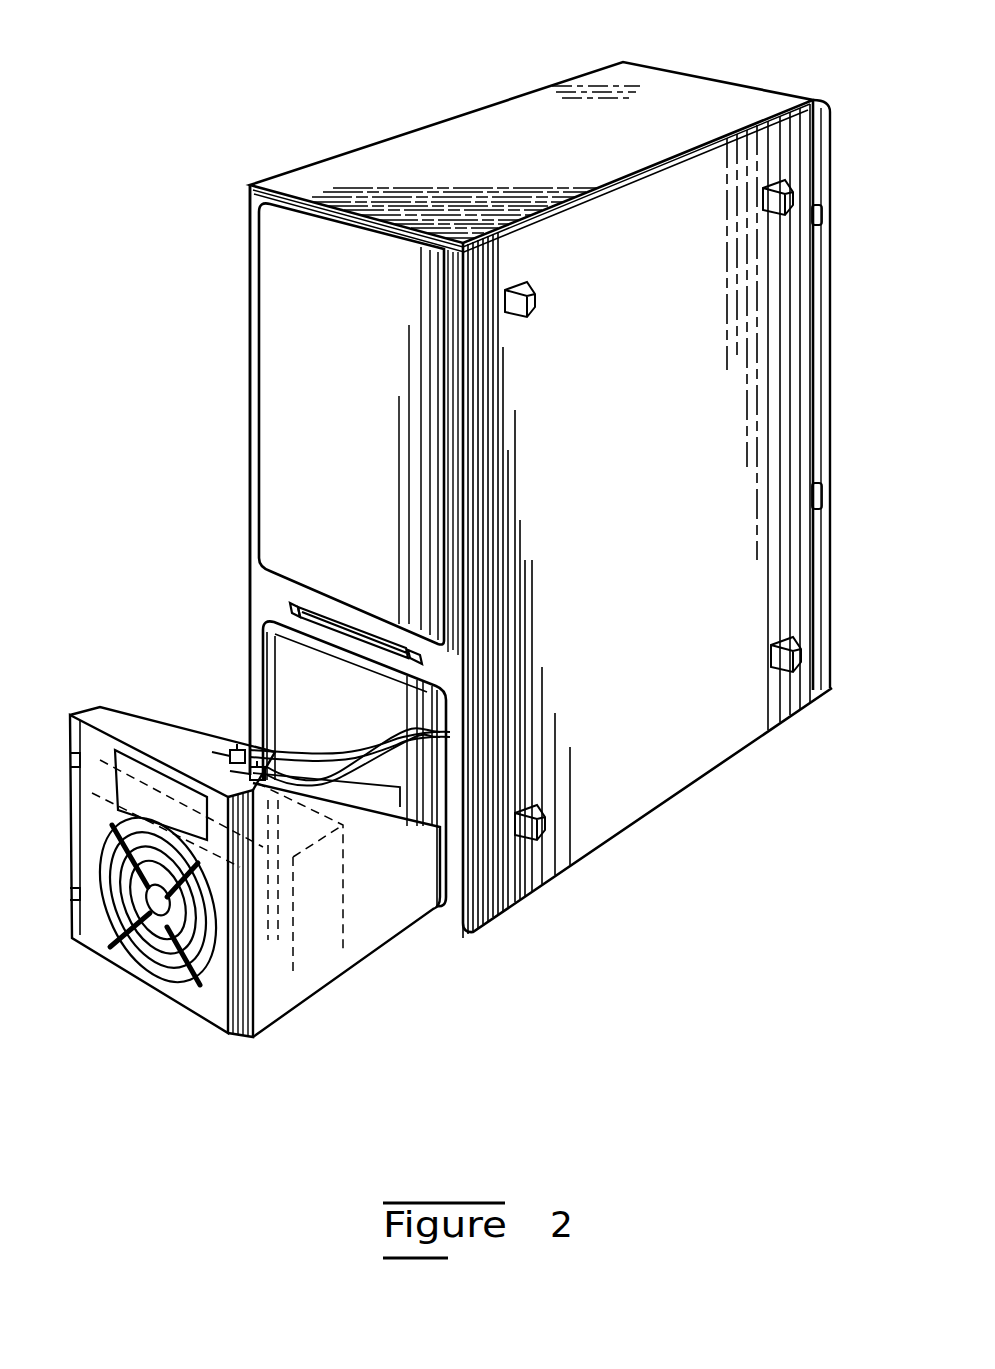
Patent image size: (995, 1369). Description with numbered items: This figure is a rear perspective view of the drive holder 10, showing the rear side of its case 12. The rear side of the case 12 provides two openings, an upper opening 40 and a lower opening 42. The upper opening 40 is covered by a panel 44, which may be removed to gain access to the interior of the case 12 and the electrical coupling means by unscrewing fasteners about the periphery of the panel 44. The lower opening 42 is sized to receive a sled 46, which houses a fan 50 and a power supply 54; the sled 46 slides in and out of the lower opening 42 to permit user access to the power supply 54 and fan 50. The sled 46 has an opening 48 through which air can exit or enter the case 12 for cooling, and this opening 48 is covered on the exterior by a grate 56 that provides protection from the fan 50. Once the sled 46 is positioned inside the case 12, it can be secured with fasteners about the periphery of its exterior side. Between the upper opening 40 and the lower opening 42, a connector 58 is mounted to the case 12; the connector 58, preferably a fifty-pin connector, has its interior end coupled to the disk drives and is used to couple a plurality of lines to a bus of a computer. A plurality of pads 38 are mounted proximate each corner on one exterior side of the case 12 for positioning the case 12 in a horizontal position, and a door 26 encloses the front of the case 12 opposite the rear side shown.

The drive holder 10 is at (468, 527).
The case 12 is at (732, 746).
The door 26 is at (820, 116).
The pads 38 is at (801, 657).
The upper opening 40 is at (258, 290).
The lower opening 42 is at (285, 660).
The panel 44 is at (308, 420).
The sled 46 is at (245, 855).
The opening 48 is at (180, 995).
The fan 50 is at (100, 765).
The power supply 54 is at (198, 760).
The grate 56 is at (114, 935).
The connector 58 is at (337, 618).